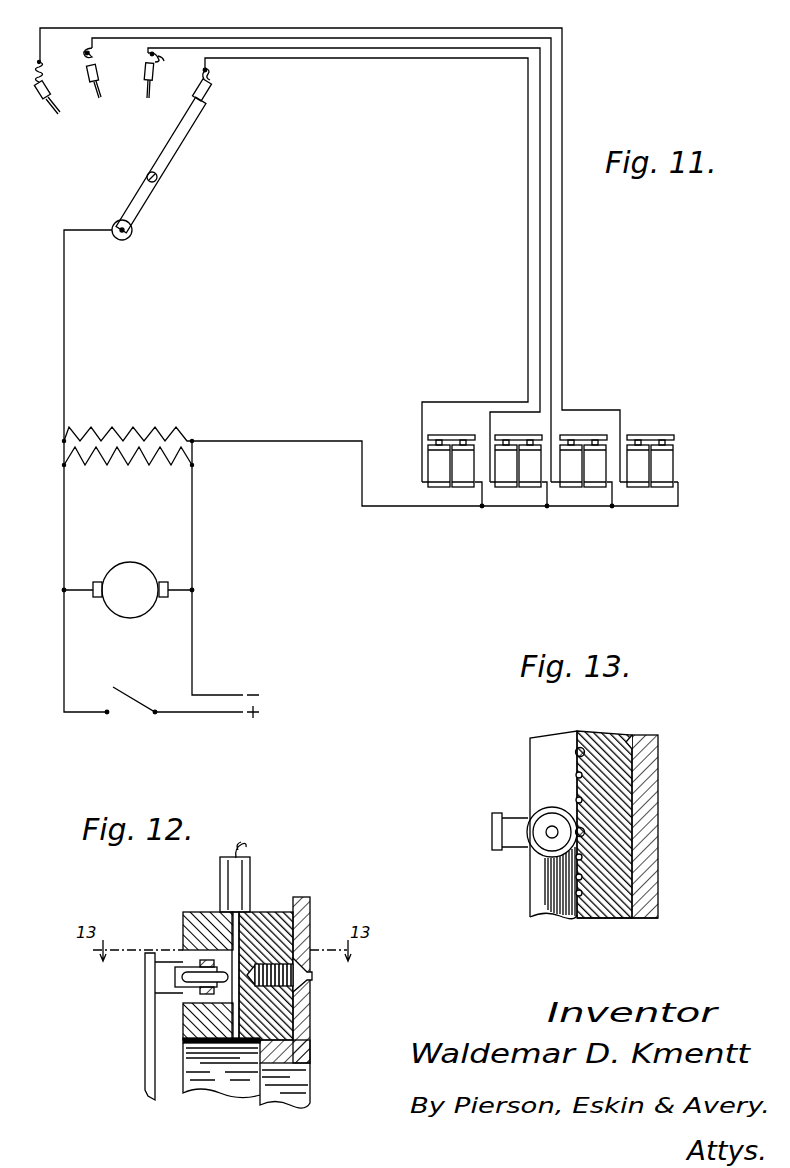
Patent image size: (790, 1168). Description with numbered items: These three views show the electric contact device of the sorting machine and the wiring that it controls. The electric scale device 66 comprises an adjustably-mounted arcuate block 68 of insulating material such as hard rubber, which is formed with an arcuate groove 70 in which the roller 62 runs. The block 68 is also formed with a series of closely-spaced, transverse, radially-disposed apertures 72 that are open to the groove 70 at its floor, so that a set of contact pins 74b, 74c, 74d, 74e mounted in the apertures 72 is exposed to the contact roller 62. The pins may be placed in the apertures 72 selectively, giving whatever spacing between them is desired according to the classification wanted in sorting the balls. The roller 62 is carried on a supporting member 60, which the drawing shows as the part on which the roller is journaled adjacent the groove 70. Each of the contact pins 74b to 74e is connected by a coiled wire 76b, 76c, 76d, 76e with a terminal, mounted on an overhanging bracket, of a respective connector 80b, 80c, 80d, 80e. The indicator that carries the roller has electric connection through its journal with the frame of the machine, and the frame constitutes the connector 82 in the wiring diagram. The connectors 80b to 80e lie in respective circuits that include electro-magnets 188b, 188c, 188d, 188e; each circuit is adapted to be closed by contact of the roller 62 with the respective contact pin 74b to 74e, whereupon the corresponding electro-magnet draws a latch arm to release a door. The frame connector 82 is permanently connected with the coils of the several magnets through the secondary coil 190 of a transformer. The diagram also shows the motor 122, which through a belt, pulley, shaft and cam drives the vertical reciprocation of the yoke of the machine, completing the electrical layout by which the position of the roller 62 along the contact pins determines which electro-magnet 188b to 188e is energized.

In FIG. 11, the connector 80b is at (64, 27).
In FIG. 11, the connector 80c is at (130, 28).
In FIG. 11, the connector 80d is at (198, 46).
In FIG. 11, the connector 80e is at (258, 58).
In FIG. 11, the coiled wire 76b is at (33, 72).
In FIG. 11, the coiled wire 76c is at (84, 60).
In FIG. 11, the coiled wire 76d is at (164, 58).
In FIG. 11, the coiled wire 76e is at (211, 78).
In FIG. 12, the coiled wire 76e is at (247, 846).
In FIG. 11, the contact pin 74b is at (50, 107).
In FIG. 11, the contact pin 74c is at (100, 92).
In FIG. 11, the contact pin 74d is at (143, 88).
In FIG. 13, the contact pin 74d is at (576, 752).
In FIG. 11, the contact pin 74e is at (198, 104).
In FIG. 12, the contact pin 74e is at (218, 898).
In FIG. 13, the contact pin 74e is at (562, 812).
In FIG. 11, the connector 82 is at (65, 347).
In FIG. 11, the secondary coil 190 is at (153, 425).
In FIG. 11, the motor 122 is at (118, 617).
In FIG. 11, the electro-magnet 188b is at (662, 475).
In FIG. 11, the electro-magnet 188c is at (598, 475).
In FIG. 11, the electro-magnet 188d is at (528, 475).
In FIG. 11, the electro-magnet 188e is at (461, 475).
In FIG. 12, the arcuate block 68 is at (260, 910).
In FIG. 13, the arcuate block 68 is at (614, 731).
In FIG. 12, the arcuate groove 70 is at (187, 1035).
In FIG. 13, the arcuate groove 70 is at (545, 768).
In FIG. 12, the apertures 72 is at (235, 1043).
In FIG. 13, the apertures 72 is at (625, 734).
In FIG. 12, the electric scale device 66 is at (230, 1097).
In FIG. 13, the electric scale device 66 is at (595, 920).
In FIG. 12, the supporting plate 60 is at (150, 1083).
In FIG. 13, the supporting plate 60 is at (492, 845).
In FIG. 12, the roller 62 is at (187, 980).
In FIG. 13, the roller 62 is at (545, 857).